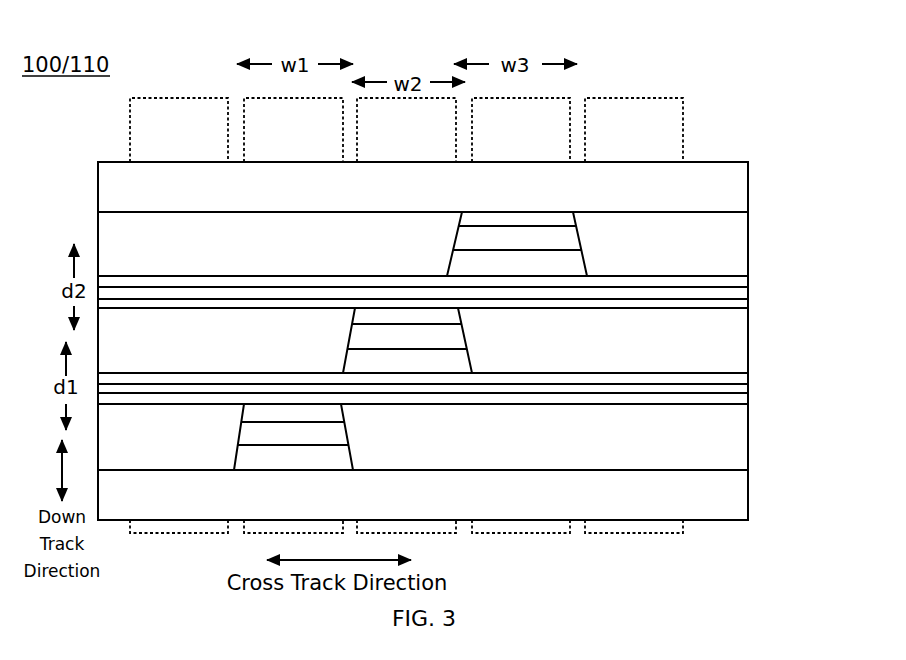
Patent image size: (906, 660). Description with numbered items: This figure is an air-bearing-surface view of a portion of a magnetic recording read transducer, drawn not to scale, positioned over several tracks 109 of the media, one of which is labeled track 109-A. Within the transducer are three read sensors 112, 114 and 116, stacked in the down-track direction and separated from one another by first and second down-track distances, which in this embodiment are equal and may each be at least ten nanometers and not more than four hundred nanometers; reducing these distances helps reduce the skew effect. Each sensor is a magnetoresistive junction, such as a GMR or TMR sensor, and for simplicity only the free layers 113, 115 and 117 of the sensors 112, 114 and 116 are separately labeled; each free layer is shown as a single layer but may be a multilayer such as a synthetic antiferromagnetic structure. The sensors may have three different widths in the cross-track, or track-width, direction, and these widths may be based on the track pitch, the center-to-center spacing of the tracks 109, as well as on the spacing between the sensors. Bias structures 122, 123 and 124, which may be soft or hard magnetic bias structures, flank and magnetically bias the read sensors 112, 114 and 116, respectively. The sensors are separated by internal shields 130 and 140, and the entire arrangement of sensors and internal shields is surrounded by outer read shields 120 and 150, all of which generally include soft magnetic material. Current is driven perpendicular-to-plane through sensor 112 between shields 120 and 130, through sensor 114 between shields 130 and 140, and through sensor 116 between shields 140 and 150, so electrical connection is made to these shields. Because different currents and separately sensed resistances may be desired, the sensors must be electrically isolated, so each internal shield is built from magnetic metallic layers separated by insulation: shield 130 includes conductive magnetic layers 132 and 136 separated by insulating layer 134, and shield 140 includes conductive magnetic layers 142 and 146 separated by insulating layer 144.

The track 109 is at (406, 315).
The center track 109-A is at (406, 315).
The read sensor 112 is at (265, 483).
The free layer 113 is at (293, 437).
The read sensor 114 is at (434, 435).
The free layer 115 is at (407, 340).
The read sensor 116 is at (558, 172).
The free layer 117 is at (517, 244).
The read shield 120 is at (520, 495).
The bias structure 122 is at (376, 439).
The bias structure 123 is at (367, 341).
The bias structure 124 is at (477, 245).
The shield 130 is at (683, 418).
The conductive magnetic layer 132 is at (700, 408).
The insulating layer 134 is at (748, 393).
The conductive magnetic layer 136 is at (748, 377).
The shield 140 is at (700, 257).
The conductive magnetic layer 142 is at (748, 305).
The insulating layer 144 is at (748, 292).
The conductive magnetic layer 146 is at (717, 275).
The read shield 150 is at (388, 188).